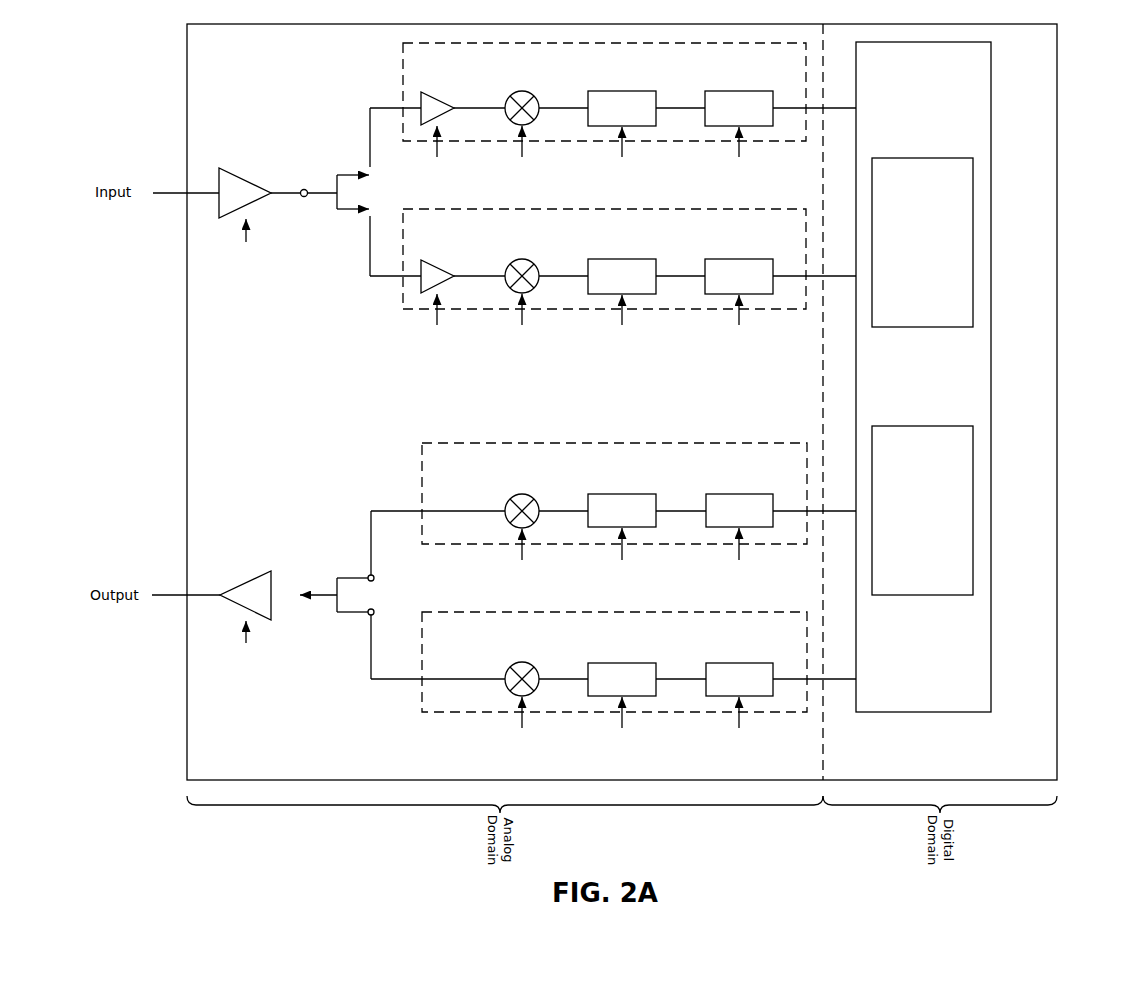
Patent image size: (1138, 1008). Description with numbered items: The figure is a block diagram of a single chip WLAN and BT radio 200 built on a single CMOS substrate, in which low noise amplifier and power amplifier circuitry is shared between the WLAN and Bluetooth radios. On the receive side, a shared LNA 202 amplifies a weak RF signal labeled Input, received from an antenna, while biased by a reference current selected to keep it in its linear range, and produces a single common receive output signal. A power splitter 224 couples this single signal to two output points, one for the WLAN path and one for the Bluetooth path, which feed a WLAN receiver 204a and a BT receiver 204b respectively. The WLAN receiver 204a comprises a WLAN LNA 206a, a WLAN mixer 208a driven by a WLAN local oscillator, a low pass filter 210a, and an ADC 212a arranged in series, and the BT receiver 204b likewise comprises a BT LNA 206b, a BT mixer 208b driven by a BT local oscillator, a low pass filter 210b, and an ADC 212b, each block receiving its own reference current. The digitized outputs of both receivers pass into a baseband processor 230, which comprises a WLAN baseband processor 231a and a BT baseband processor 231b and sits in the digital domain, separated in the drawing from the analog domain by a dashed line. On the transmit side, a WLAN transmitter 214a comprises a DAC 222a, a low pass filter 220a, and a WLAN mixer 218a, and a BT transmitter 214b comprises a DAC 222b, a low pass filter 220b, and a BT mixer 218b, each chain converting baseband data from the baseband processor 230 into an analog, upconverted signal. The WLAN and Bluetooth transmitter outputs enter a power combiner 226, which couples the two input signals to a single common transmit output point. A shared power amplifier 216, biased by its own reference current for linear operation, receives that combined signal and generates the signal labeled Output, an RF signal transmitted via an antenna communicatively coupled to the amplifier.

The single chip WLAN and BT radio 200 is at (1057, 378).
The shared LNA 202 is at (242, 176).
The WLAN receiver 204a is at (403, 83).
The BT receiver 204b is at (403, 300).
The WLAN LNA 206a is at (437, 92).
The BT LNA 206b is at (437, 260).
The WLAN mixer 208a is at (522, 91).
The BT mixer 208b is at (522, 259).
The low pass filter 210a is at (624, 91).
The low pass filter 210b is at (624, 259).
The ADC 212a is at (740, 91).
The ADC 212b is at (740, 259).
The WLAN transmitter 214a is at (422, 465).
The BT transmitter 214b is at (422, 705).
The shared power amplifier 216 is at (250, 583).
The WLAN mixer 218a is at (522, 494).
The BT mixer 218b is at (522, 662).
The low pass filter 220a is at (624, 494).
The low pass filter 220b is at (624, 662).
The DAC 222a is at (740, 494).
The DAC 222b is at (740, 662).
The power splitter 224 is at (337, 212).
The power combiner 226 is at (341, 613).
The baseband processor 230 is at (923, 377).
The WLAN baseband processor 231a is at (922, 242).
The BT baseband processor 231b is at (922, 510).